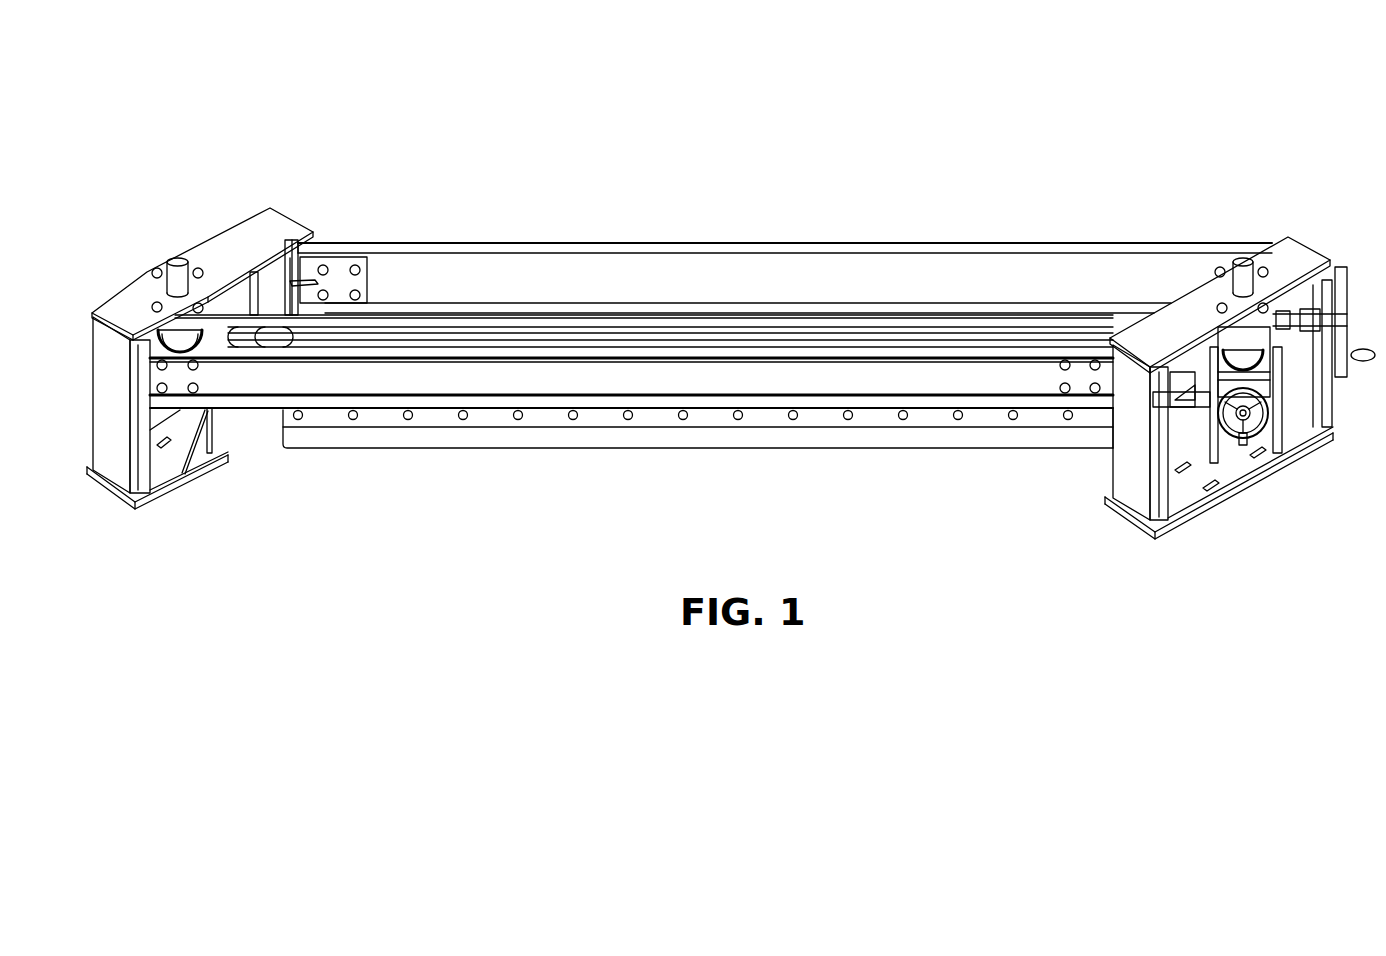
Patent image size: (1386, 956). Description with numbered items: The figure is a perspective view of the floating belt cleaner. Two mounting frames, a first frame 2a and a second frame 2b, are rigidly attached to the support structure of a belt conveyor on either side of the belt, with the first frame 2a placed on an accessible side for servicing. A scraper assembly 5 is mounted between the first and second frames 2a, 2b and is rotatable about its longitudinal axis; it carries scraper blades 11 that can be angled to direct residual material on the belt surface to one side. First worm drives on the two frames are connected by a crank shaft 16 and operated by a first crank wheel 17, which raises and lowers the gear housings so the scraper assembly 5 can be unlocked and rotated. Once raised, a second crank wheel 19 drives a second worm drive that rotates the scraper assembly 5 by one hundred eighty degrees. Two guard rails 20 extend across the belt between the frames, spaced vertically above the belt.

The first frame 2a is at (1293, 258).
The second frame 2b is at (283, 230).
The scraper assembly 5 is at (462, 481).
The scraper blades 11 is at (1000, 437).
The crank shaft 16 is at (580, 320).
The first crank wheel 17 is at (1343, 272).
The second crank wheel 19 is at (1255, 435).
The guard rails 20 is at (868, 273).